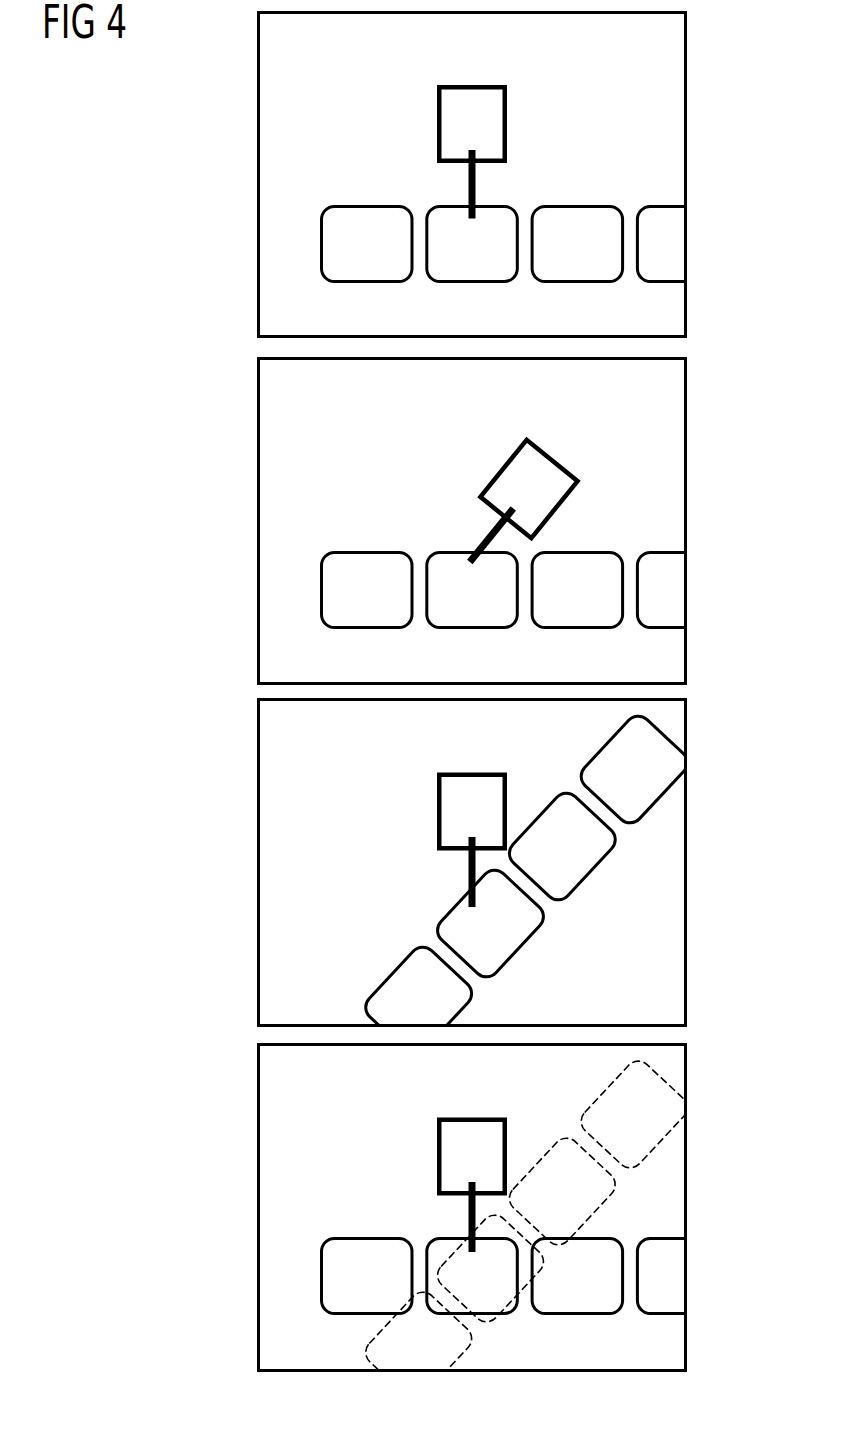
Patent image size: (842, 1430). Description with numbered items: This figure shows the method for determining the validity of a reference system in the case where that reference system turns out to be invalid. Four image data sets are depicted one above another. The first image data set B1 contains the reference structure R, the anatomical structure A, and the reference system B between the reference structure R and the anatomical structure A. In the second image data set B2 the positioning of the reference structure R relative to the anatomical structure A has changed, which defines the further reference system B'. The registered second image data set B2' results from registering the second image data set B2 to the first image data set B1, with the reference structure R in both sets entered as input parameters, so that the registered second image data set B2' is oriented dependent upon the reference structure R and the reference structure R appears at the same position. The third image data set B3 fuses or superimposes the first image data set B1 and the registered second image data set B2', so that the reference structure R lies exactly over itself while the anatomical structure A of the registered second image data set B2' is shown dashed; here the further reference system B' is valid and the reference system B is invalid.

The reference structure R is at (437, 126).
The anatomical structure A is at (437, 205).
The reference system B is at (525, 722).
The further reference system B' is at (525, 929).
The first image data set B1 is at (687, 150).
The second image data set B2 is at (510, 521).
The registered second image data set B2' is at (514, 863).
The third image data set B3 is at (687, 1195).